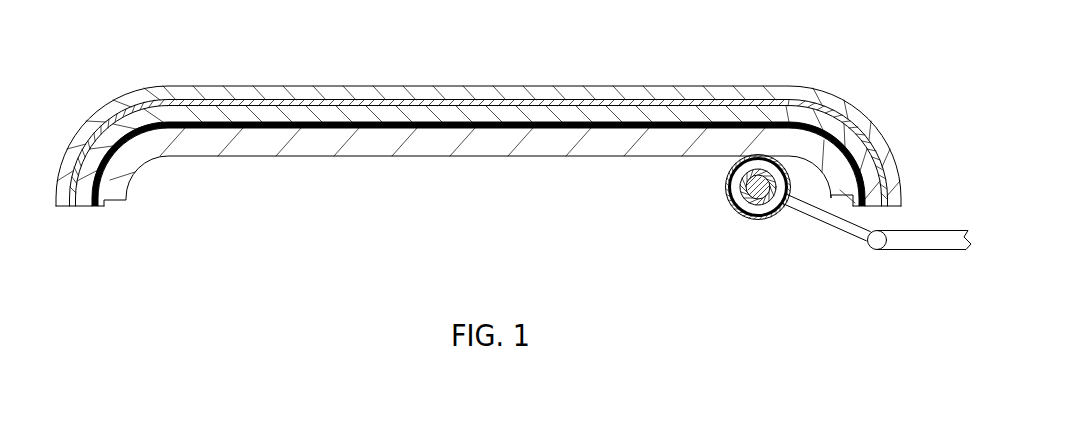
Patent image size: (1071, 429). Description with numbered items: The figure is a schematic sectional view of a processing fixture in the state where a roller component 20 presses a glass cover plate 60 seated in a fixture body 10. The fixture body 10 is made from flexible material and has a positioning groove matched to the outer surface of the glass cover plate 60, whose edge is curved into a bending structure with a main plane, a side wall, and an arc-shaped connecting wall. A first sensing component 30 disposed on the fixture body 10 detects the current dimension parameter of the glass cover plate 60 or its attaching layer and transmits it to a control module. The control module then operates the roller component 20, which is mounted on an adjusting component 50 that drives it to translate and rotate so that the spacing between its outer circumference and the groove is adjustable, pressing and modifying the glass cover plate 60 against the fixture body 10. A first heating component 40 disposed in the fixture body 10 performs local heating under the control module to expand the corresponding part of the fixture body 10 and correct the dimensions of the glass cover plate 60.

The fixture body 10 is at (613, 88).
The roller component 20 is at (738, 215).
The first sensing component 30 is at (482, 128).
The first heating component 40 is at (431, 101).
The adjusting component 50 is at (845, 235).
The glass cover plate 60 is at (580, 150).